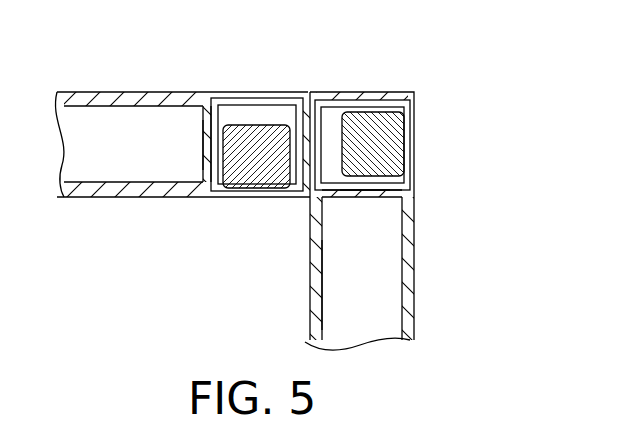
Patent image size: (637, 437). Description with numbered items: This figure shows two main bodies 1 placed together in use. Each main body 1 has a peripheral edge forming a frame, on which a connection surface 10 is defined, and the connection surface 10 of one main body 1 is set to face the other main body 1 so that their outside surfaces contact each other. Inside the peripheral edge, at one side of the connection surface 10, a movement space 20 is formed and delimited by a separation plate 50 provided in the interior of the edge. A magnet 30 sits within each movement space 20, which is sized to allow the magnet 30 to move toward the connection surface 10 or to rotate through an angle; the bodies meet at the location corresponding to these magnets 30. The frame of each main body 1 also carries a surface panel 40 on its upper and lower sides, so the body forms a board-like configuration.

The main body 1 is at (137, 93).
The connection surface 10 is at (292, 108).
The movement space 20 is at (238, 110).
The magnet 30 is at (385, 122).
The surface panel 40 is at (310, 291).
The separation plate 50 is at (205, 145).